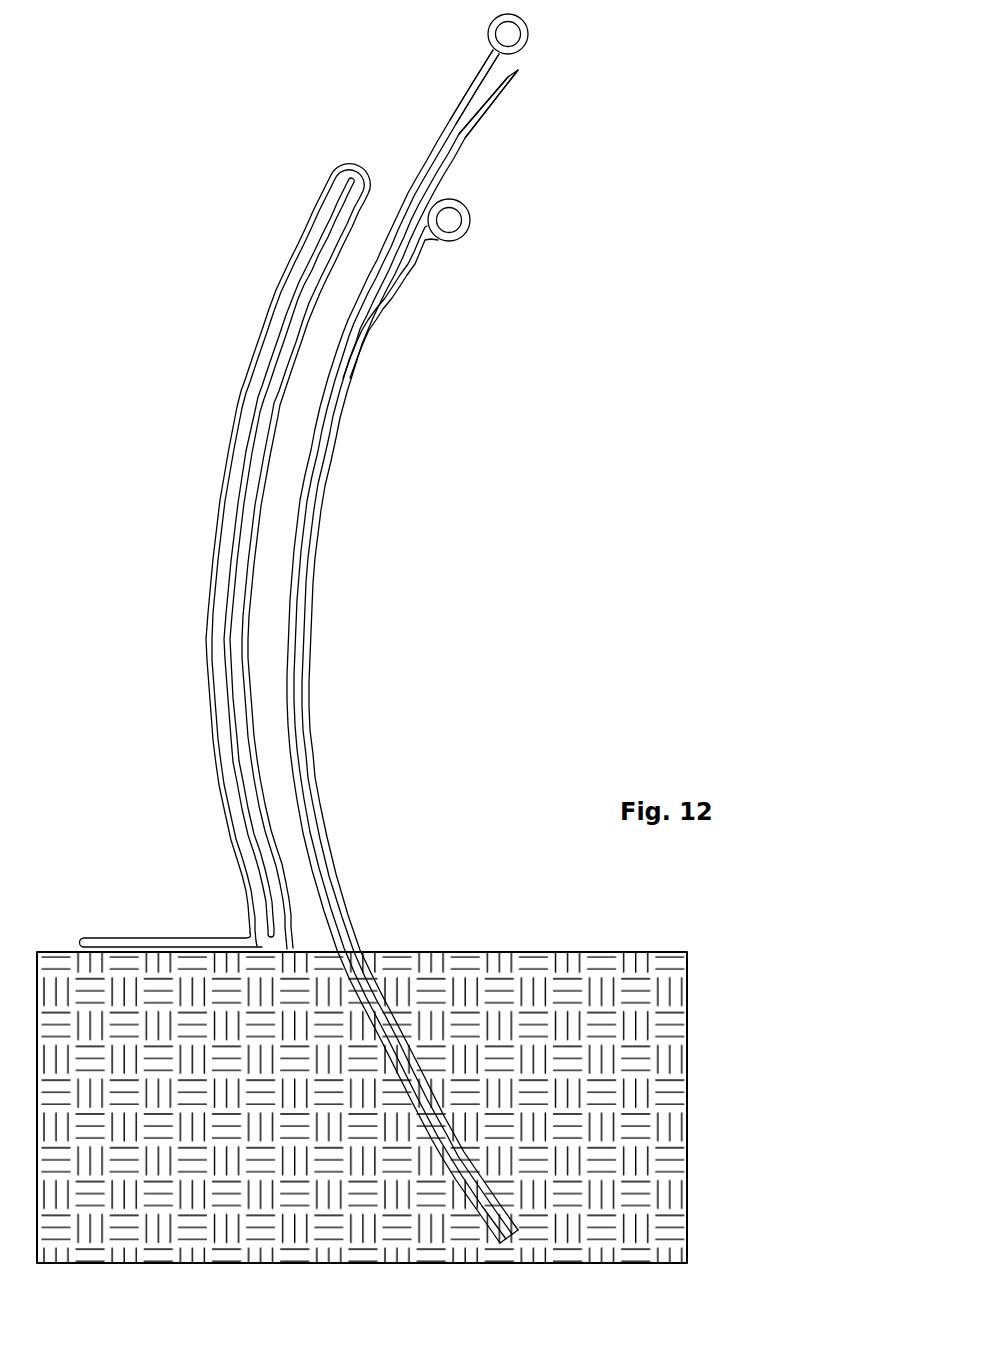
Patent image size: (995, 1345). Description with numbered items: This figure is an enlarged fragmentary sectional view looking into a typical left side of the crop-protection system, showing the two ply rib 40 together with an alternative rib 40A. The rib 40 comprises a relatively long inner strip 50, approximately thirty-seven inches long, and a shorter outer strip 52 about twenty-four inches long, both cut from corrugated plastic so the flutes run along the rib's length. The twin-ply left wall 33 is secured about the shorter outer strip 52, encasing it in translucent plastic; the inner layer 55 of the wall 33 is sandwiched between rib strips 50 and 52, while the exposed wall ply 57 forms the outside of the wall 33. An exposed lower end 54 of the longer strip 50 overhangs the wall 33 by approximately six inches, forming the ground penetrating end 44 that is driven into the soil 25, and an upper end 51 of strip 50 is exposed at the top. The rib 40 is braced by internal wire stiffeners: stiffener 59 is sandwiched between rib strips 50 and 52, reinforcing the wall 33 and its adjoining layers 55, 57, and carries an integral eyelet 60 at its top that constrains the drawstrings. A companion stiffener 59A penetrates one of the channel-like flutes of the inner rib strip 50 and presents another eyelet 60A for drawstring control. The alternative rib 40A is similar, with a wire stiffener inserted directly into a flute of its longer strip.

The soil 25 is at (662, 1194).
The twin-ply left wall 33 is at (98, 418).
The two ply rib 40 is at (490, 620).
The alternative two ply rib 40A is at (320, 186).
The ground penetrating end 44 is at (470, 1028).
The inner strip 50 is at (448, 170).
The upper end 51 is at (513, 81).
The outer strip 52 is at (237, 800).
The exposed lower end 54 is at (385, 1003).
The inner layer 55 is at (245, 557).
The exposed wall ply 57 is at (210, 646).
The stiffener 59 is at (446, 134).
The companion stiffener 59A is at (393, 298).
The eyelet 60 is at (525, 25).
The eyelet 60A is at (470, 230).